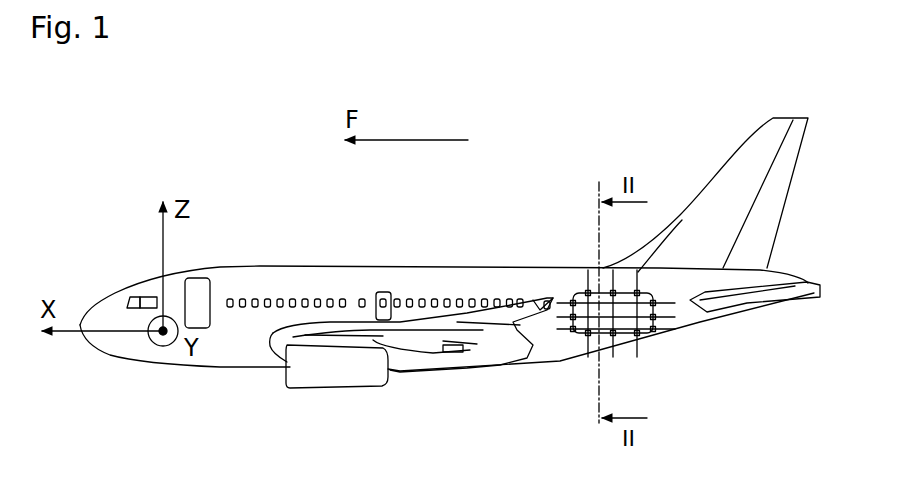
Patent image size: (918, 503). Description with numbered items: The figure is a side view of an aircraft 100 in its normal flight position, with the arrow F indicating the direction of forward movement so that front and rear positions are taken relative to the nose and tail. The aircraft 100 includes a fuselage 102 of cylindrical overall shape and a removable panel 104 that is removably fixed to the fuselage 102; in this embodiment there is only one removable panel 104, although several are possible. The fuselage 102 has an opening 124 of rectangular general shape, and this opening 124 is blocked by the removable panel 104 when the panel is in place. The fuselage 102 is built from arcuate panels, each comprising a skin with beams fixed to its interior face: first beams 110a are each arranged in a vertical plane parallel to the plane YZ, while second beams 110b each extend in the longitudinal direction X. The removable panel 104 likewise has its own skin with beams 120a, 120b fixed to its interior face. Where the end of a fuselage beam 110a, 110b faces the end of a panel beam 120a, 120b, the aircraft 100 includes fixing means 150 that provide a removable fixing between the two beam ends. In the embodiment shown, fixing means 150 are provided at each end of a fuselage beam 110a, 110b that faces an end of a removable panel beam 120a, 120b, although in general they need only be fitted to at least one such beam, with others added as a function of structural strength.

The aircraft 100 is at (316, 211).
The fuselage 102 is at (344, 268).
The removable panel 104 is at (724, 358).
The first beams 110a is at (590, 292).
The second beams 110b is at (573, 289).
The beam of the removable panel 120a is at (640, 338).
The beam of the removable panel 120b is at (583, 333).
The opening 124 is at (625, 336).
The fixing means 150 is at (657, 267).